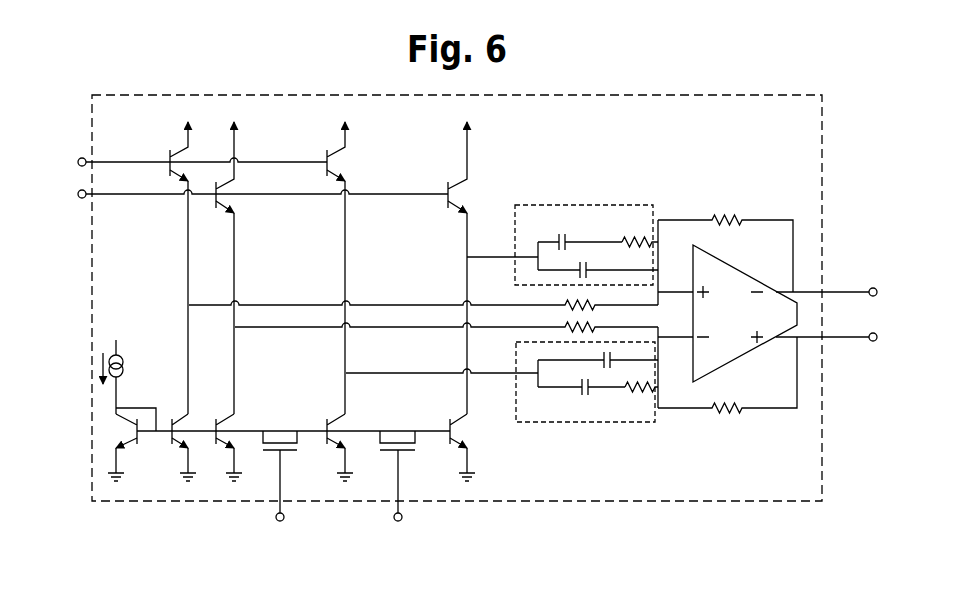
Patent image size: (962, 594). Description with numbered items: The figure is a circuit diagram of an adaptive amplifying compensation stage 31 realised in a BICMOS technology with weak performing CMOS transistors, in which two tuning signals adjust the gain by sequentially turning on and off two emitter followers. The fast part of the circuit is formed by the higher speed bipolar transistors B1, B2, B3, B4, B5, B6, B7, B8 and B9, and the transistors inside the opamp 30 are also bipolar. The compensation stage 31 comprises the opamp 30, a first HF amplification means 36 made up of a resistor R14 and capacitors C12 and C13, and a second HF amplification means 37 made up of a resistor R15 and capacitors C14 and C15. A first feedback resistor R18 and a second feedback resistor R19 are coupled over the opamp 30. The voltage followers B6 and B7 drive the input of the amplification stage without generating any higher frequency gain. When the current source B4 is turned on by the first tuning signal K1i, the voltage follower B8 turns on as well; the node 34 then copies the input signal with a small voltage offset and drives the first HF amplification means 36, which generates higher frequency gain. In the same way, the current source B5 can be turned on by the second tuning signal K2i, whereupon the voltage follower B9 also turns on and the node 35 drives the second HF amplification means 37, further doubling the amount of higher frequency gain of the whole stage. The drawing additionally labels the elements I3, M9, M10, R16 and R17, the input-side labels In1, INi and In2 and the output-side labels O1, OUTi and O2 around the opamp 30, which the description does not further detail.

The opamp 30 is at (727, 368).
The compensation stage 31 is at (525, 501).
The node 34 is at (346, 250).
The node 35 is at (467, 246).
The first HF amplification means 36 is at (587, 399).
The second HF amplification means 37 is at (586, 219).
The bipolar transistor B1 is at (116, 447).
The bipolar transistor B2 is at (170, 447).
The bipolar transistor B3 is at (222, 447).
The current source B4 is at (328, 447).
The current source B5 is at (473, 447).
The voltage follower B6 is at (163, 151).
The voltage follower B7 is at (215, 175).
The voltage follower B8 is at (351, 151).
The voltage follower B9 is at (475, 167).
The current source I3 is at (128, 377).
The MOS transistor M9 is at (280, 464).
The MOS transistor M10 is at (395, 464).
The capacitor C12 is at (580, 233).
The capacitor C13 is at (598, 261).
The capacitor C14 is at (581, 397).
The capacitor C15 is at (598, 353).
The resistor R14 is at (633, 230).
The resistor R15 is at (627, 399).
The resistor R16 is at (423, 293).
The resistor R17 is at (446, 333).
The first feedback resistor R18 is at (725, 240).
The second feedback resistor R19 is at (727, 390).
The input terminal In1 is at (184, 148).
The input signal INi is at (60, 173).
The input terminal In2 is at (245, 196).
The output terminal O1 is at (834, 277).
The output signal OUTi is at (870, 310).
The output terminal O2 is at (835, 351).
The first tuning signal K1i is at (279, 534).
The second tuning signal K2i is at (403, 534).